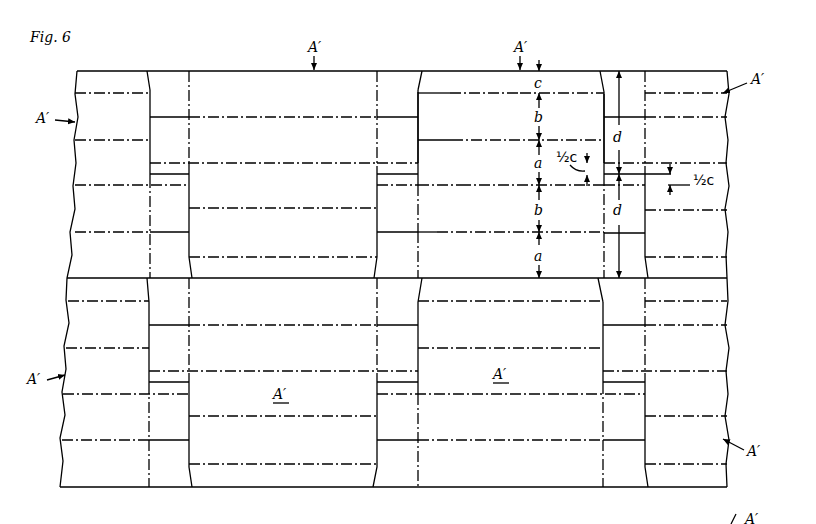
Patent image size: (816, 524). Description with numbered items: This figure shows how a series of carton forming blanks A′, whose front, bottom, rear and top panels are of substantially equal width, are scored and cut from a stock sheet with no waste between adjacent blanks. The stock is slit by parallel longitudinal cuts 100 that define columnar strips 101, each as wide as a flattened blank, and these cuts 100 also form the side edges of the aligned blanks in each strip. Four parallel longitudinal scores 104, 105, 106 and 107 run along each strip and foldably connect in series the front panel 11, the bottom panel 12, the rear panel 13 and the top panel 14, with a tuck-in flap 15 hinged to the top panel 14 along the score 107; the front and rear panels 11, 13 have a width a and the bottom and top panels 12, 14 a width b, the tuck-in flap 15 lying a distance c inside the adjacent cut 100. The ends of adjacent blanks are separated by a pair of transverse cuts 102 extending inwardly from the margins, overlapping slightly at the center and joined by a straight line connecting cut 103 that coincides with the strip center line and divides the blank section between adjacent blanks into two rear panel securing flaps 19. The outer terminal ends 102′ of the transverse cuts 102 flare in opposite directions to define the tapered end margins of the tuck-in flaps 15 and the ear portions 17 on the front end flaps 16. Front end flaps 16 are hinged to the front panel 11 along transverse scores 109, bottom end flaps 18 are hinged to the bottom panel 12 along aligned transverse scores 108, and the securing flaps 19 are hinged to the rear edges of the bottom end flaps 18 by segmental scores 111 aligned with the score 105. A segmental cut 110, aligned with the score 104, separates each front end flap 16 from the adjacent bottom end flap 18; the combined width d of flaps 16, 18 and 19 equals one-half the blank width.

The front panel 11 is at (280, 104).
The bottom panel 12 is at (280, 151).
The rear panel 13 is at (280, 197).
The top panel 14 is at (280, 242).
The tuck-in flap 15 is at (280, 276).
The front end flap 16 is at (404, 263).
The ear portion 17 is at (380, 272).
The bottom end flap 18 is at (404, 216).
The rear panel securing flap 19 is at (420, 181).
The longitudinal cut 100 is at (228, 71).
The columnar strip 101 is at (730, 183).
The transverse cut 102 is at (419, 153).
The flared end of transverse cut 102′ is at (420, 80).
The straight line connecting cut 103 is at (392, 170).
The longitudinal score 104 is at (450, 232).
The longitudinal score 105 is at (449, 186).
The longitudinal score 106 is at (452, 140).
The longitudinal score 107 is at (447, 93).
The transverse score 108 is at (419, 220).
The transverse score 109 is at (420, 250).
The longitudinal segmental cut 110 is at (392, 117).
The longitudinal segmental score 111 is at (378, 186).